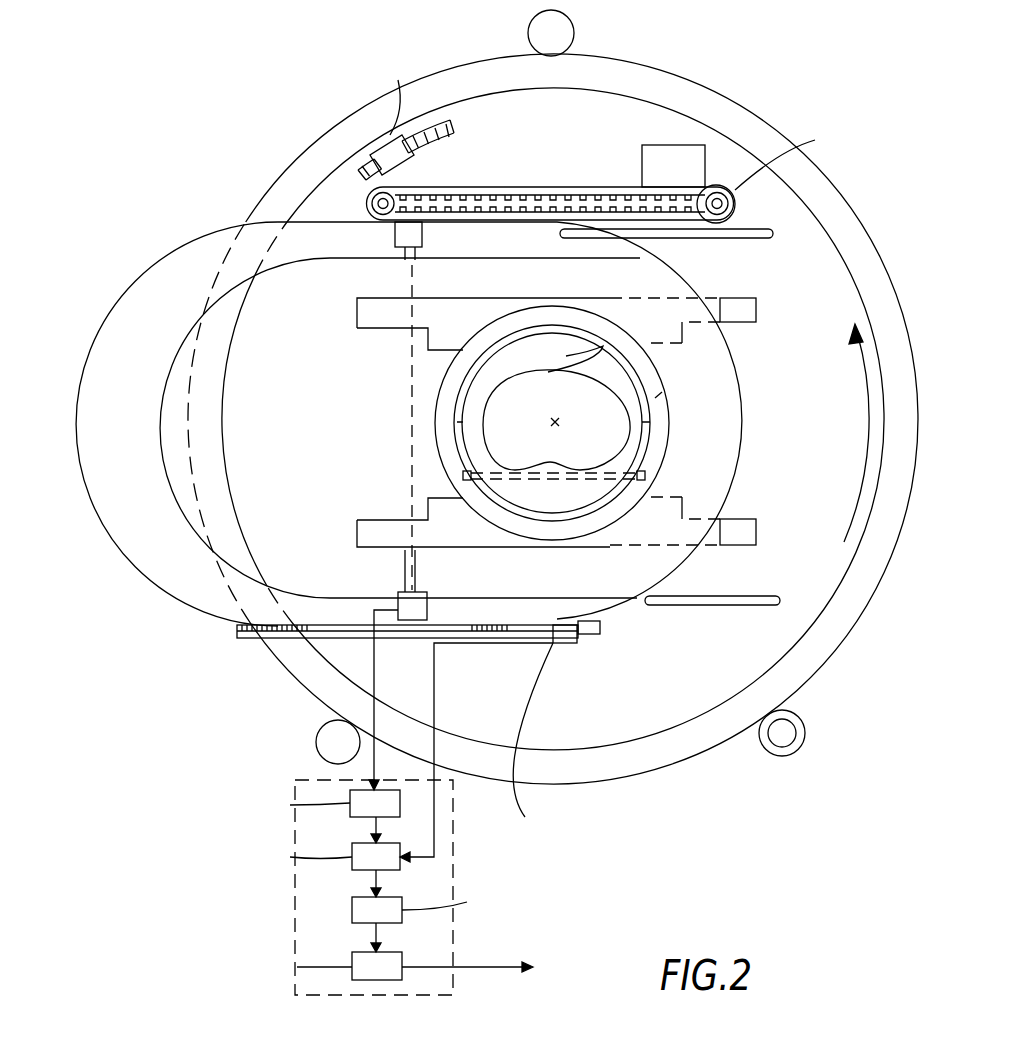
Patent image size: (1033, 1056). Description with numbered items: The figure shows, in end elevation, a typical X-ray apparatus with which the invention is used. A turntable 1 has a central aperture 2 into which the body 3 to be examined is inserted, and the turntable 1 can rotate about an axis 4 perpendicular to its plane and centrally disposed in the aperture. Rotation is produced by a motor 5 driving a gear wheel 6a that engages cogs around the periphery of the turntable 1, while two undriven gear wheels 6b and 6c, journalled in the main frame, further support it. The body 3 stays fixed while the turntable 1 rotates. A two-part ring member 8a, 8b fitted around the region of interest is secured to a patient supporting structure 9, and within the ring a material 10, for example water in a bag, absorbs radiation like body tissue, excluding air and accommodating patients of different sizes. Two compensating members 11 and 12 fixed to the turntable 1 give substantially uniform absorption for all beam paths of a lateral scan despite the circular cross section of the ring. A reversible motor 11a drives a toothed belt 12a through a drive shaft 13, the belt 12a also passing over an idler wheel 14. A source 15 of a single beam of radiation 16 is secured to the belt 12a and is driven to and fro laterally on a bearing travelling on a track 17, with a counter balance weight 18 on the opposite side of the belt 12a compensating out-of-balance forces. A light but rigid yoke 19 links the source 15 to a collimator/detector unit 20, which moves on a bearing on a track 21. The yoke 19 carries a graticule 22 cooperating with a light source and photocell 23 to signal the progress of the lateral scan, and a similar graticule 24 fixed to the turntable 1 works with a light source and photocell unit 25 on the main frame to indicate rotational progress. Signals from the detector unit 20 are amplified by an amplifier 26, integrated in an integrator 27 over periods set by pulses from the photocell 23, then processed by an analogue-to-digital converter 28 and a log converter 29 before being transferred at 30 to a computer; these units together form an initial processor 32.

The turntable 1 is at (553, 419).
The central aperture 2 is at (438, 413).
The body 3 is at (556, 420).
The axis 4 is at (560, 422).
The motor 5 is at (782, 748).
The gear wheel 6a is at (758, 745).
The undriven gear wheel 6b is at (575, 33).
The undriven gear wheel 6c is at (318, 743).
The ring member part 8a is at (652, 397).
The ring member part 8b is at (652, 430).
The supporting structure 9 is at (646, 472).
The material 10 is at (560, 353).
The compensating member 11 is at (357, 318).
The reversible motor 11a is at (735, 203).
The compensating member 12 is at (357, 533).
The toothed belt 12a is at (566, 187).
The drive shaft 13 is at (720, 190).
The idler wheel 14 is at (388, 193).
The source 15 is at (395, 238).
The beam of radiation 16 is at (408, 478).
The track 17 is at (762, 238).
The counter balance weight 18 is at (655, 145).
The yoke 19 is at (203, 613).
The collimator/detector unit 20 is at (412, 620).
The track 21 is at (750, 606).
The graticule 22 is at (253, 638).
The light source and photocell 23 is at (568, 643).
The graticule 24 is at (452, 127).
The light source and photocell unit 25 is at (377, 150).
The amplifier 26 is at (293, 816).
The integrator 27 is at (288, 870).
The analogue-to-digital converter 28 is at (506, 921).
The log converter 29 is at (292, 972).
The transfer point 30 is at (490, 968).
The initial processor 32 is at (455, 853).